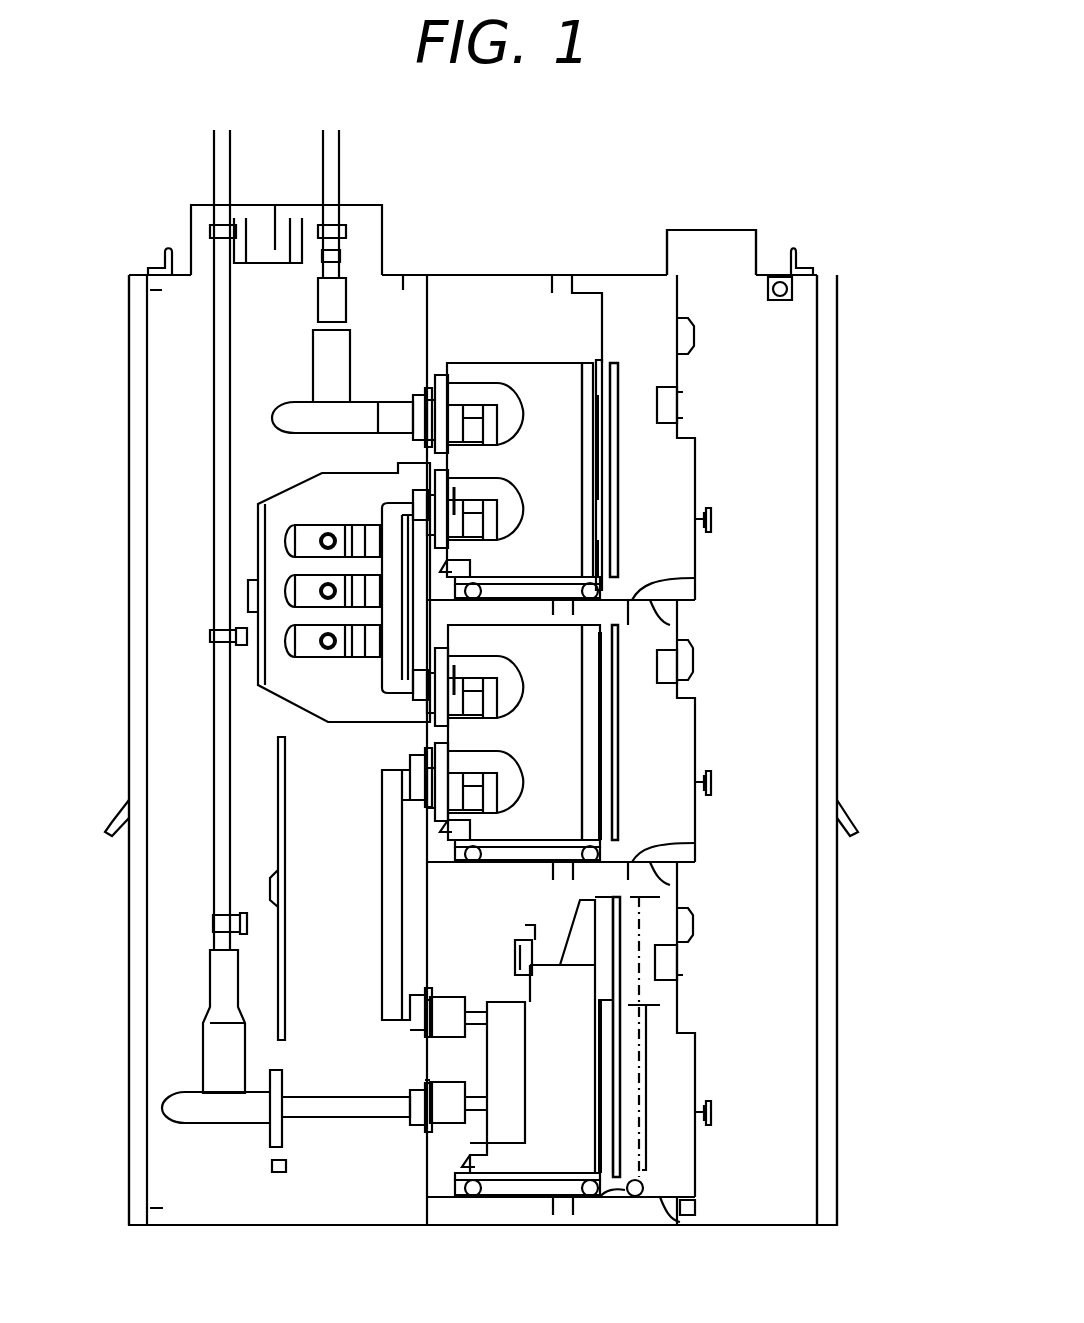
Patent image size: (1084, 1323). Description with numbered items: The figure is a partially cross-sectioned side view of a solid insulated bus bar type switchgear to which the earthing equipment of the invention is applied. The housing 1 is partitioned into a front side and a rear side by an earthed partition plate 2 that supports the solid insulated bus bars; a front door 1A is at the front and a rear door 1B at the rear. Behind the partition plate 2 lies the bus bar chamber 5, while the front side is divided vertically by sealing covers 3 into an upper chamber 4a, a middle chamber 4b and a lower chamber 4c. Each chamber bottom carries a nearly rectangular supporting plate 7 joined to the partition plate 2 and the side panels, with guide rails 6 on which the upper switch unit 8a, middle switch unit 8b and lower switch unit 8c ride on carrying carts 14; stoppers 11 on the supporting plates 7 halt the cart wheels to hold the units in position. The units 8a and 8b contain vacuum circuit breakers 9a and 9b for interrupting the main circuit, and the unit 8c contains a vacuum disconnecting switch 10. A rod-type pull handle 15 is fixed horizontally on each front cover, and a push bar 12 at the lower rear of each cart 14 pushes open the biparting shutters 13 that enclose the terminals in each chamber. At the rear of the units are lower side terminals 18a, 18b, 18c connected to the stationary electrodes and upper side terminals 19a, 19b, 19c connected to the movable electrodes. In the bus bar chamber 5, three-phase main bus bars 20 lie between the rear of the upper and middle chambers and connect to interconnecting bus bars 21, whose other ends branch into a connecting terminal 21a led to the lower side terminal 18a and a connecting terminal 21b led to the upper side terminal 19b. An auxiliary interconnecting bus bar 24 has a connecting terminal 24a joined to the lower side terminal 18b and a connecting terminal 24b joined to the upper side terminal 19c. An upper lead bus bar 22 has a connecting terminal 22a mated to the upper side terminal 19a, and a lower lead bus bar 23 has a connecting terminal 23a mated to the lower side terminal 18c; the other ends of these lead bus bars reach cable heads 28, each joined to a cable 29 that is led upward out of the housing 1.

The housing 1 is at (838, 275).
The front door 1A is at (836, 594).
The rear door 1B is at (128, 476).
The partition plate 2 is at (425, 1190).
The sealing cover 3 is at (690, 380).
The upper chamber 4a is at (637, 300).
The middle chamber 4b is at (700, 820).
The lower chamber 4c is at (700, 1162).
The bus bar chamber 5 is at (218, 1222).
The guide rails 6 is at (690, 582).
The supporting plate 7 is at (672, 622).
The upper switch unit 8a is at (527, 366).
The middle switch unit 8b is at (582, 606).
The lower switch unit 8c is at (514, 964).
The vacuum circuit breaker 9a is at (560, 382).
The vacuum circuit breaker 9b is at (598, 650).
The vacuum disconnecting switch 10 is at (514, 996).
The stopper 11 is at (475, 580).
The push bar 12 is at (510, 556).
The biparting shutters 13 is at (624, 384).
The carrying cart 14 is at (600, 558).
The pull handle 15 is at (604, 472).
The lower side terminal 18a is at (478, 486).
The lower side terminal 18b is at (478, 758).
The lower side terminal 18c is at (490, 1124).
The upper side terminal 19a is at (476, 415).
The upper side terminal 19b is at (490, 695).
The upper side terminal 19c is at (474, 1034).
The main bus bars 20 is at (290, 665).
The interconnecting bus bars 21 is at (384, 666).
The connecting terminal 21a is at (400, 498).
The connecting terminal 21b is at (398, 692).
The lead bus bar 22 is at (362, 404).
The connecting terminal 22a is at (398, 434).
The lead bus bar 23 is at (340, 1098).
The connecting terminal 23a is at (405, 1120).
The auxiliary interconnecting bus bar 24 is at (382, 892).
The connecting terminal 24a is at (385, 784).
The connecting terminal 24b is at (384, 1012).
The cable head 28 is at (318, 372).
The cable 29 is at (214, 162).